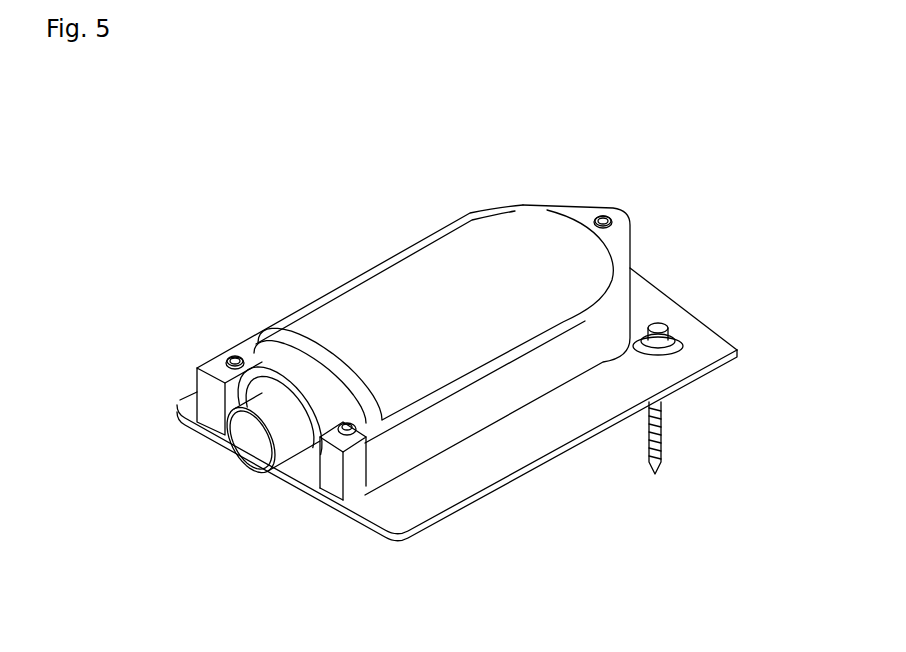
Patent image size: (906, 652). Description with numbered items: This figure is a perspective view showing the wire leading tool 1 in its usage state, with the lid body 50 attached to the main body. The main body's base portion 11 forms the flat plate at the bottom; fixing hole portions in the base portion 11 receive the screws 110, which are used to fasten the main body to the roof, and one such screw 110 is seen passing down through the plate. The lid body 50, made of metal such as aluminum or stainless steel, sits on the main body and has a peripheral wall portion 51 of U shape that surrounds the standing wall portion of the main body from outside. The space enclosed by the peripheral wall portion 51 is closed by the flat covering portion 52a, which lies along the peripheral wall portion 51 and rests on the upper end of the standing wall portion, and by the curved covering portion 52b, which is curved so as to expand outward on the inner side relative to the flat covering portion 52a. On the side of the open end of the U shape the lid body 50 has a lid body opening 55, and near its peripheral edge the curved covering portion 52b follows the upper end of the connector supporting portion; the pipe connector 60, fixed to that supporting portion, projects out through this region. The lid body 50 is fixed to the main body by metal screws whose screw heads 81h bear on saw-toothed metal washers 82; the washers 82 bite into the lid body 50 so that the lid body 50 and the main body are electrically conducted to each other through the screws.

The wire leading tool 1 is at (219, 134).
The base portion 11 is at (461, 488).
The lid body 50 is at (424, 348).
The peripheral wall portion 51 is at (490, 397).
The flat covering portion 52a is at (561, 345).
The curved covering portion 52b is at (418, 272).
The lid body opening 55 is at (290, 408).
The pipe connector 60 is at (256, 462).
The screw head 81h is at (233, 357).
The washer 82 is at (613, 228).
The screw 110 is at (668, 425).